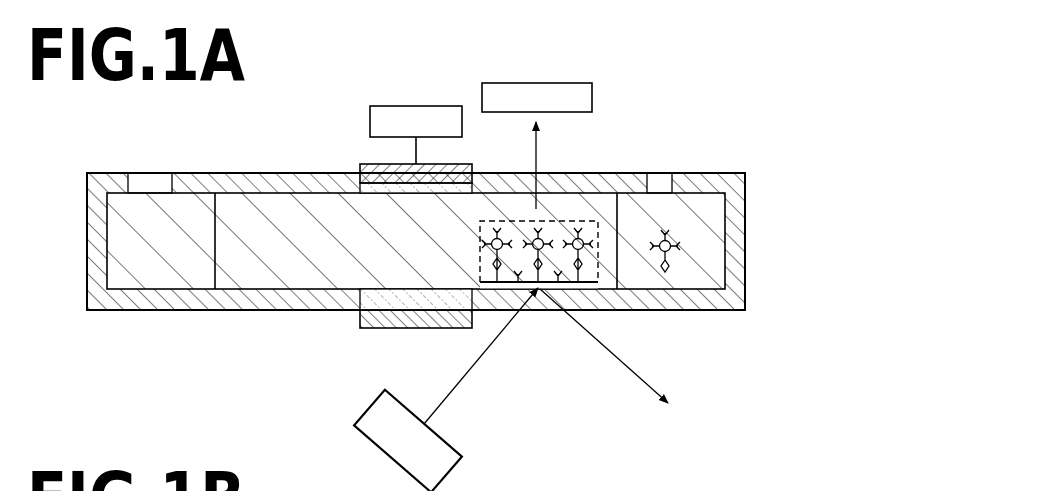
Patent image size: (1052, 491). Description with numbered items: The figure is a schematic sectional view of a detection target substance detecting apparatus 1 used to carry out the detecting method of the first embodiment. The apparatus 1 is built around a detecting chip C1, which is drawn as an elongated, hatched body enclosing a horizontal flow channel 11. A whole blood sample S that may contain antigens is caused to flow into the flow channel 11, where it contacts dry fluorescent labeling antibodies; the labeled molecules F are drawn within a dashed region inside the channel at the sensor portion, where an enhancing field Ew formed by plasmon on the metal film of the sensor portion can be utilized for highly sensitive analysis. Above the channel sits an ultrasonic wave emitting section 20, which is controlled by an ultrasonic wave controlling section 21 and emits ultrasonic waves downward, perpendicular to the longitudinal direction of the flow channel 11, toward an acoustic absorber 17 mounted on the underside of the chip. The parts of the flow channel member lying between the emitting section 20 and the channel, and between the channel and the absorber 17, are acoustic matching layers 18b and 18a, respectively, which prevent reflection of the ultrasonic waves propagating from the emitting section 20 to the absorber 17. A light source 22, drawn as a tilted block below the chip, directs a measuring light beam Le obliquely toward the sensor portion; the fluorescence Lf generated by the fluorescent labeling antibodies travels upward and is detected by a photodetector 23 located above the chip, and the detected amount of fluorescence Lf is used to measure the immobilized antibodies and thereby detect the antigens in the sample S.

The detecting apparatus 1 is at (464, 263).
The flow channel 11 is at (240, 212).
The acoustic absorber 17 is at (390, 330).
The acoustic matching layer 18a is at (358, 300).
The acoustic matching layer 18b is at (347, 183).
The ultrasonic wave emitting section 20 is at (468, 165).
The ultrasonic wave controlling section 21 is at (438, 111).
The light source 22 is at (452, 470).
The photodetector 23 is at (594, 96).
The whole blood sample S is at (146, 212).
The detecting chip C1 is at (766, 238).
The fluorescent label F is at (482, 240).
The enhancing field Ew is at (482, 263).
The measuring light beam Le is at (478, 353).
The fluorescence Lf is at (550, 165).